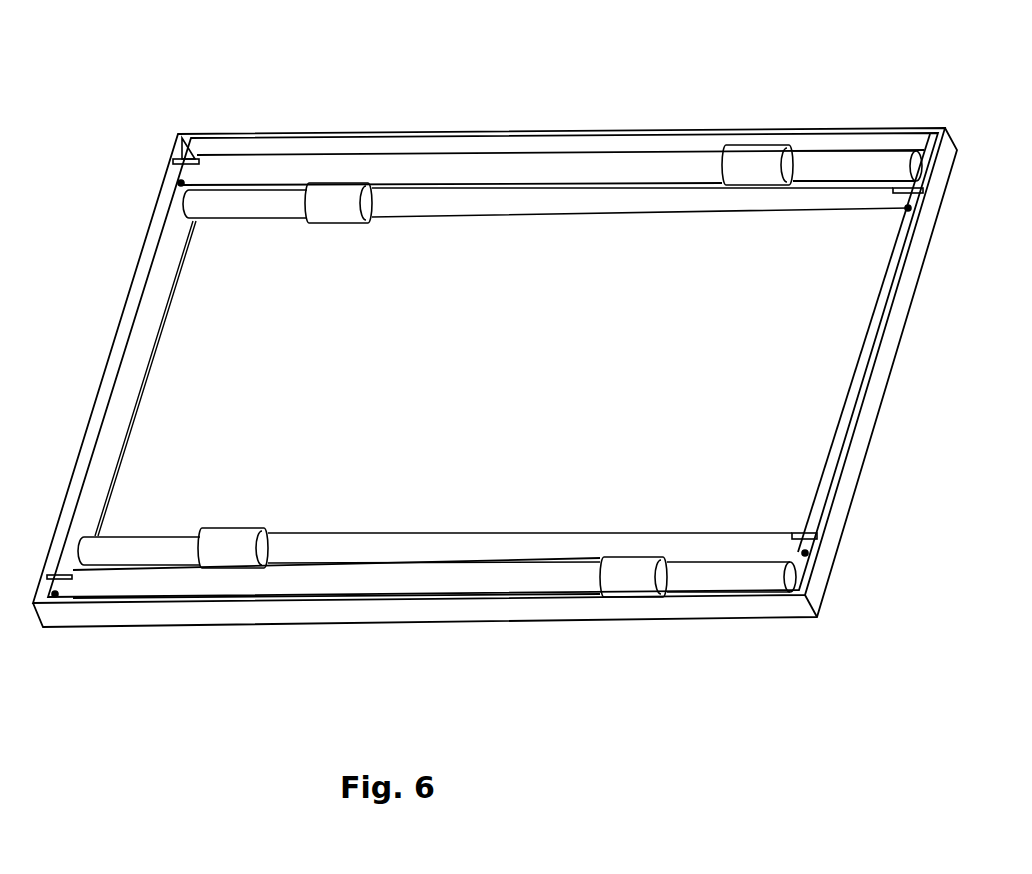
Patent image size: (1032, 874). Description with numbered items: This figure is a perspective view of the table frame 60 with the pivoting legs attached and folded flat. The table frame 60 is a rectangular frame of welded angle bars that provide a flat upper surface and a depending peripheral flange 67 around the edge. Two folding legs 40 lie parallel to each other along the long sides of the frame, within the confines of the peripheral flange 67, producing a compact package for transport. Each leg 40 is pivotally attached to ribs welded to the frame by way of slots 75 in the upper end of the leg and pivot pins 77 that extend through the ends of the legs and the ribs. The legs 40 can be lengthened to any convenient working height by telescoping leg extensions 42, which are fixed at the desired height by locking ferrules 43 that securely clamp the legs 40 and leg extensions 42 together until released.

The table frame 60 is at (652, 122).
The slots 75 is at (190, 153).
The legs 40 is at (498, 165).
The leg extensions 42 is at (238, 207).
The locking ferrules 43 is at (247, 527).
The peripheral flange 67 is at (123, 348).
The pivot pins 77 is at (181, 184).